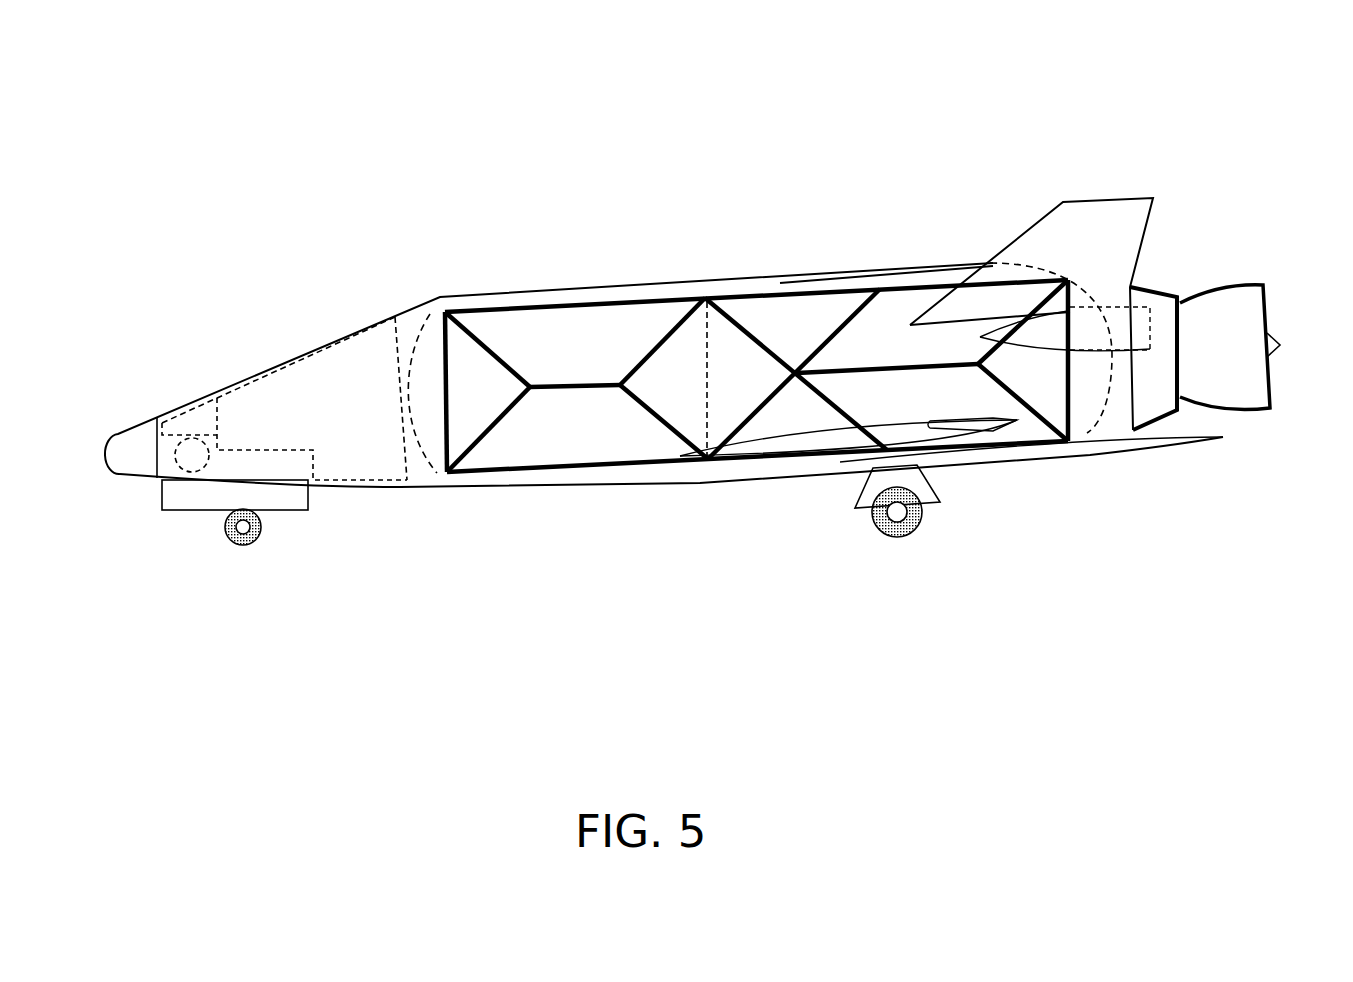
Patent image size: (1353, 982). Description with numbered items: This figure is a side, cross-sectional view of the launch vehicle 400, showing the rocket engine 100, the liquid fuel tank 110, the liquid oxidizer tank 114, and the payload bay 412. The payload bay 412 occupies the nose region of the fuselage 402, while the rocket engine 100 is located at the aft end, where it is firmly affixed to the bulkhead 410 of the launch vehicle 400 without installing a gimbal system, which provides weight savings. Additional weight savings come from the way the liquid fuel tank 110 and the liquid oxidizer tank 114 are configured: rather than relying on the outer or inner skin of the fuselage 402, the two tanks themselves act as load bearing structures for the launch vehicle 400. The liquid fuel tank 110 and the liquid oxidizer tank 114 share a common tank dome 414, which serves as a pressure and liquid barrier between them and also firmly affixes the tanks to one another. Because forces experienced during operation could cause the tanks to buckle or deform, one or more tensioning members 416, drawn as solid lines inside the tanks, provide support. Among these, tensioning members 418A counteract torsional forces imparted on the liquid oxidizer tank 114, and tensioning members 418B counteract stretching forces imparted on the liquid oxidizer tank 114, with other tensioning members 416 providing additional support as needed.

The rocket engine 100 is at (1247, 378).
The liquid fuel tank 110 is at (810, 330).
The liquid oxidizer tank 114 is at (756, 368).
The launch vehicle 400 is at (710, 305).
The fuselage 402 is at (517, 258).
The bulkhead 410 is at (1185, 283).
The payload bay 412 is at (292, 403).
The common tank dome 414 is at (707, 393).
The tensioning members 416 is at (648, 468).
The tensioning members 418A is at (640, 357).
The tensioning members 418B is at (577, 389).